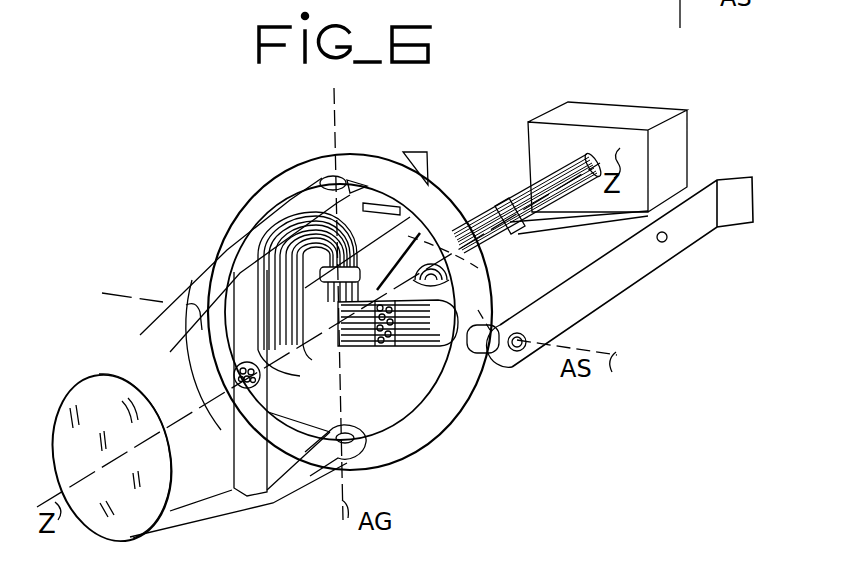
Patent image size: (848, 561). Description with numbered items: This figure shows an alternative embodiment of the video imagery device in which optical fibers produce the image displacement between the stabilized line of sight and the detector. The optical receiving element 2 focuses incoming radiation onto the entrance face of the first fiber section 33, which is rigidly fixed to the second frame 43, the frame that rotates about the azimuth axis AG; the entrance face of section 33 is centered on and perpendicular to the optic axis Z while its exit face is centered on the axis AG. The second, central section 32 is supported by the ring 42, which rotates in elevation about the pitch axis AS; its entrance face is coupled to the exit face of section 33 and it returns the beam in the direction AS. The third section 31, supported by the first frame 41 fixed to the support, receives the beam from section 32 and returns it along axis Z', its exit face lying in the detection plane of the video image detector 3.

The optical receiving element 2 is at (135, 428).
The video image detector 3 is at (668, 152).
The third section 31 is at (422, 350).
The second section 32 is at (366, 340).
The first section 33 is at (294, 410).
The first frame 41 is at (618, 268).
The ring 42 is at (300, 176).
The second frame 43 is at (138, 340).